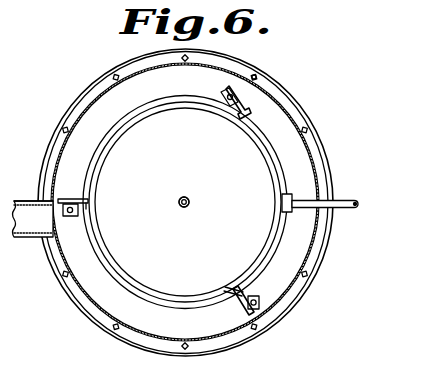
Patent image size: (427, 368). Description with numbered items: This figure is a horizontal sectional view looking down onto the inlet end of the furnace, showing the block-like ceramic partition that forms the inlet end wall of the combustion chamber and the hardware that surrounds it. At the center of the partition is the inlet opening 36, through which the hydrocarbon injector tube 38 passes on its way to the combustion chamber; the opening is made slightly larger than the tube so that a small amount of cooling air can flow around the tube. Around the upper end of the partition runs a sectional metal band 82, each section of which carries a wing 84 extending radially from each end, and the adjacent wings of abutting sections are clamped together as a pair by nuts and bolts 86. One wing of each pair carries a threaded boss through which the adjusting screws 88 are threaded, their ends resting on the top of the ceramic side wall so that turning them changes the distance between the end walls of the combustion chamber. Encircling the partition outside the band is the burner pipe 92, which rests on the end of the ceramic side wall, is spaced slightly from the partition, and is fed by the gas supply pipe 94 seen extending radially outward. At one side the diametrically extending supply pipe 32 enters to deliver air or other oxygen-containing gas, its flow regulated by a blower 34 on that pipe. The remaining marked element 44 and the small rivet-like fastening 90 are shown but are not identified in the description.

The supply pipe 32 is at (23, 200).
The blower 34 is at (26, 201).
The inlet opening 36 is at (179, 201).
The hydrocarbon injector tube 38 is at (189, 200).
The support member 44 is at (5, 328).
The sectional metal band 82 is at (144, 285).
The wing 84 is at (239, 313).
The nuts and bolts 86 is at (80, 199).
The adjusting screws 88 is at (232, 84).
The rivet 90 is at (233, 102).
The burner pipe 92 is at (282, 171).
The gas supply pipe 94 is at (356, 209).